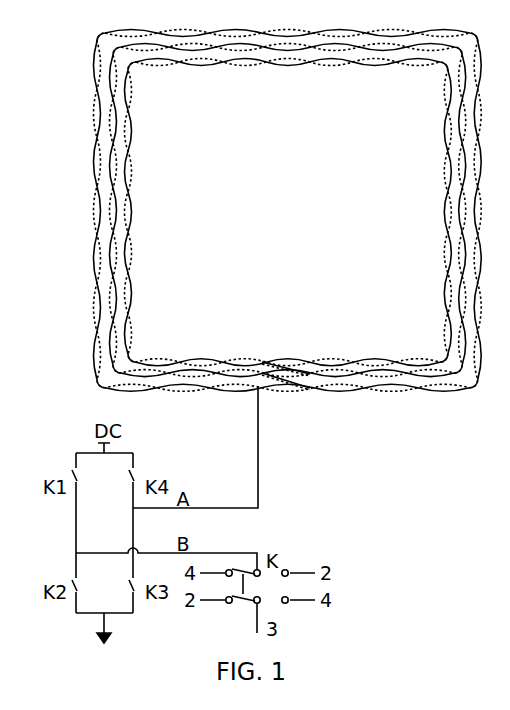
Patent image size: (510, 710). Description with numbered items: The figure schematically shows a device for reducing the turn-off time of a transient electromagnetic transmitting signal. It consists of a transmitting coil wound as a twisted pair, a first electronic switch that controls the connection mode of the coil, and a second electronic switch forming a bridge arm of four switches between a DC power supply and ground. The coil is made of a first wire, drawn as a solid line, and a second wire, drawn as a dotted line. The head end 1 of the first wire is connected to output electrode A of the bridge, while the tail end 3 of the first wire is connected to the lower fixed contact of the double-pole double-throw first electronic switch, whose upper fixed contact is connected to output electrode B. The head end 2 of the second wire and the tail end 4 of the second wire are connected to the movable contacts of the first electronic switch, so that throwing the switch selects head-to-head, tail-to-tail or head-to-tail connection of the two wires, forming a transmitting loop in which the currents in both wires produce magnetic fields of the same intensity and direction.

The head end of the first wire 1 is at (258, 390).
The head end of the second wire 2 is at (258, 382).
The tail end of the first wire 3 is at (312, 363).
The tail end of the second wire 4 is at (310, 361).